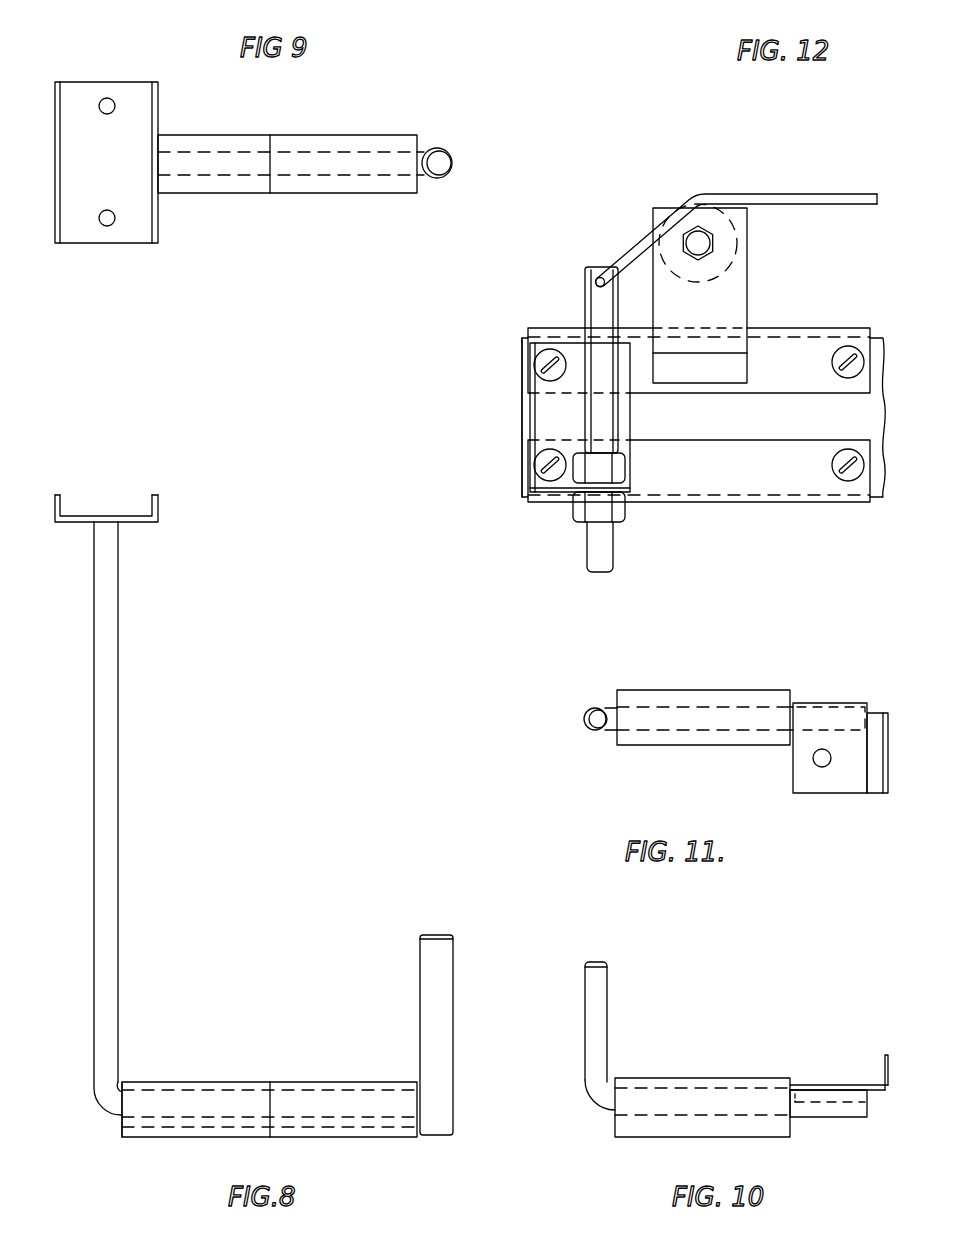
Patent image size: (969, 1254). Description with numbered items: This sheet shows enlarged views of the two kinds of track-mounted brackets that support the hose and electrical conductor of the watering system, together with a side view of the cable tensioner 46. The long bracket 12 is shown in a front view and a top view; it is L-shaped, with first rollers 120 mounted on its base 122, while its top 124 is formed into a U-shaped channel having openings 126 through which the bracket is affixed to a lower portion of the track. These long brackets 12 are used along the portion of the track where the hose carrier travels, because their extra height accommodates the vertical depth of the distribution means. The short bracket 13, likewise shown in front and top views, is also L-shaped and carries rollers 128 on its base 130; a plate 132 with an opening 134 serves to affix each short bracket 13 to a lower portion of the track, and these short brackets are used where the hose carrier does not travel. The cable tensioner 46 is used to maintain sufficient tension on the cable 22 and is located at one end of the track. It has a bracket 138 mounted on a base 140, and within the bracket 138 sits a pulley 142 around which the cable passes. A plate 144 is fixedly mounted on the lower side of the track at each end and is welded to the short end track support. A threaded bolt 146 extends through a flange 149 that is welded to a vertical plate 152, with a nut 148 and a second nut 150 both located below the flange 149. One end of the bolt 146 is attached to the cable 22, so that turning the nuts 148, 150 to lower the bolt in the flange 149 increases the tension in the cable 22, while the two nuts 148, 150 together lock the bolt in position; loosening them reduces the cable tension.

In FIG. 8, the long bracket 12 is at (115, 684).
In FIG. 10, the short bracket 13 is at (602, 1042).
In FIG. 12, the cable 22 is at (833, 195).
In FIG. 12, the cable tensioner 46 is at (640, 178).
In FIG. 9, the first rollers 120 is at (318, 193).
In FIG. 8, the first rollers 120 is at (230, 1083).
In FIG. 8, the base 122 is at (123, 1081).
In FIG. 9, the top 124 is at (148, 215).
In FIG. 8, the top 124 is at (145, 522).
In FIG. 9, the openings 126 is at (113, 221).
In FIG. 10, the rollers 128 is at (737, 1093).
In FIG. 10, the base 130 is at (828, 1105).
In FIG. 11, the plate 132 is at (858, 786).
In FIG. 11, the opening 134 is at (817, 763).
In FIG. 12, the bracket 138 is at (745, 213).
In FIG. 12, the base 140 is at (797, 335).
In FIG. 12, the pulley 142 is at (697, 207).
In FIG. 12, the plate 144 is at (823, 501).
In FIG. 12, the threaded bolt 146 is at (607, 558).
In FIG. 12, the nut 148 is at (577, 510).
In FIG. 12, the flange 149 is at (548, 484).
In FIG. 12, the nut 150 is at (620, 471).
In FIG. 12, the vertical plate 152 is at (543, 405).